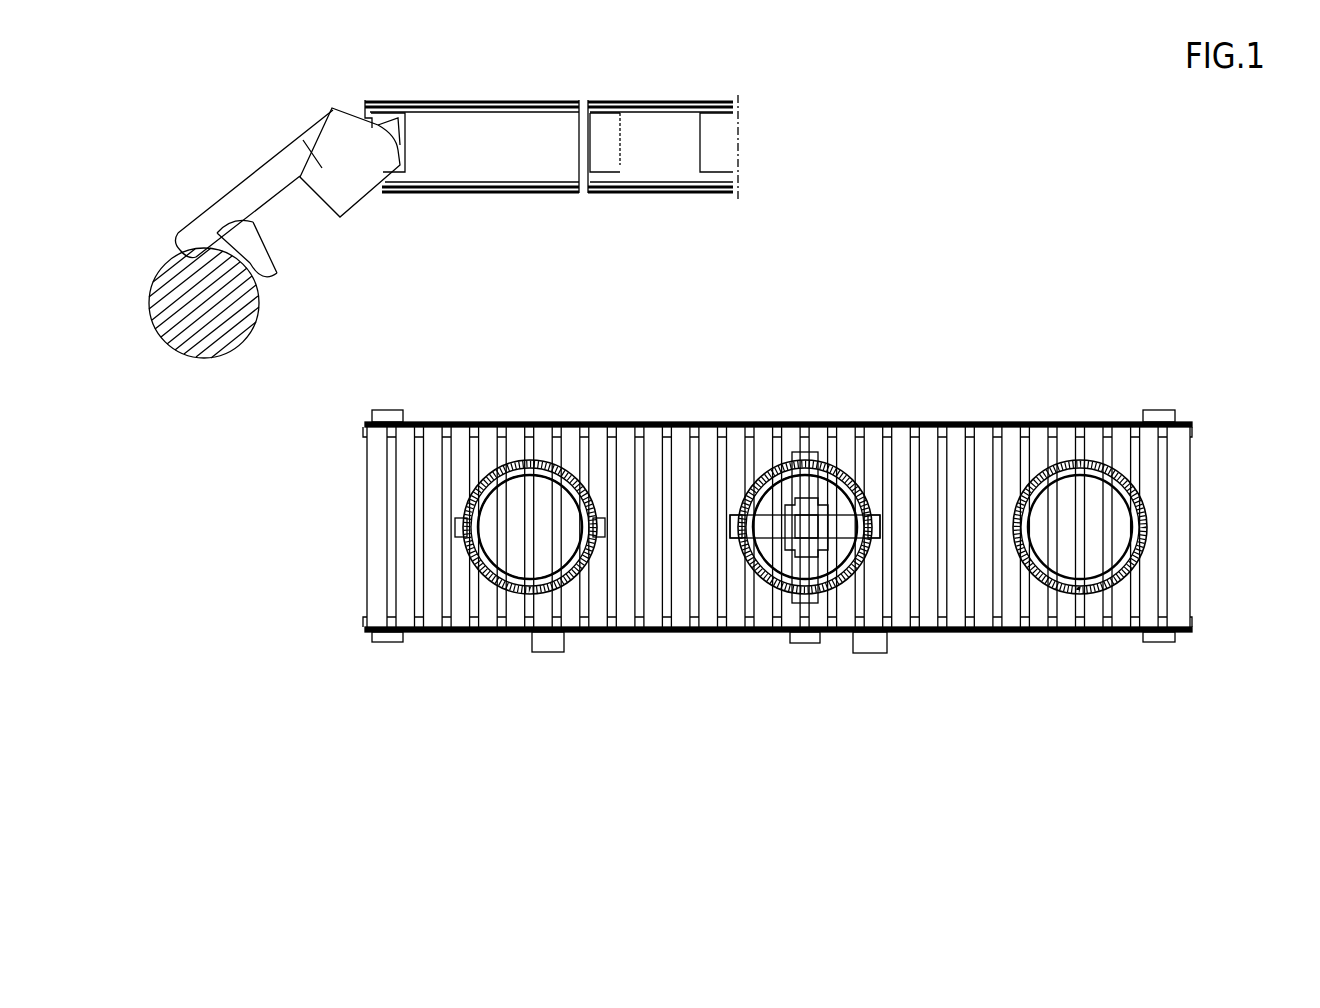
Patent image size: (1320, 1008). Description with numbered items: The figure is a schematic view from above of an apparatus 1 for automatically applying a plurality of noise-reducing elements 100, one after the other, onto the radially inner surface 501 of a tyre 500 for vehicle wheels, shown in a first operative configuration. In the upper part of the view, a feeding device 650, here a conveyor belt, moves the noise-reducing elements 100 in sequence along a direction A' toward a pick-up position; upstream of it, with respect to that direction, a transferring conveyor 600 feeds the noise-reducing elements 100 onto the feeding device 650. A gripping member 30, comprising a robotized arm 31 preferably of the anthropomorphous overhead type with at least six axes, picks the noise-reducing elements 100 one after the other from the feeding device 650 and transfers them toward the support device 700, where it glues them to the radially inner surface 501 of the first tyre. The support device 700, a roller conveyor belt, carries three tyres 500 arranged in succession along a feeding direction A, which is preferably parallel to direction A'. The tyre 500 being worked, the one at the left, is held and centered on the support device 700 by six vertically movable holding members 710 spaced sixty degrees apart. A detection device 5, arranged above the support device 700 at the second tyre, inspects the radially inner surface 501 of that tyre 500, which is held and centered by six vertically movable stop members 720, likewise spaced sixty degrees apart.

The apparatus 1 is at (1060, 212).
The detection device 5 is at (808, 537).
The gripping member 30 is at (302, 228).
The robotized arm 31 is at (290, 162).
The noise-reducing element 100 is at (392, 122).
The tyre 500 is at (507, 587).
The radially inner surface 501 is at (517, 533).
The transferring conveyor 600 is at (657, 204).
The feeding device 650 is at (480, 204).
The support device 700 is at (968, 650).
The holding member 710 is at (483, 490).
The stop member 720 is at (745, 518).